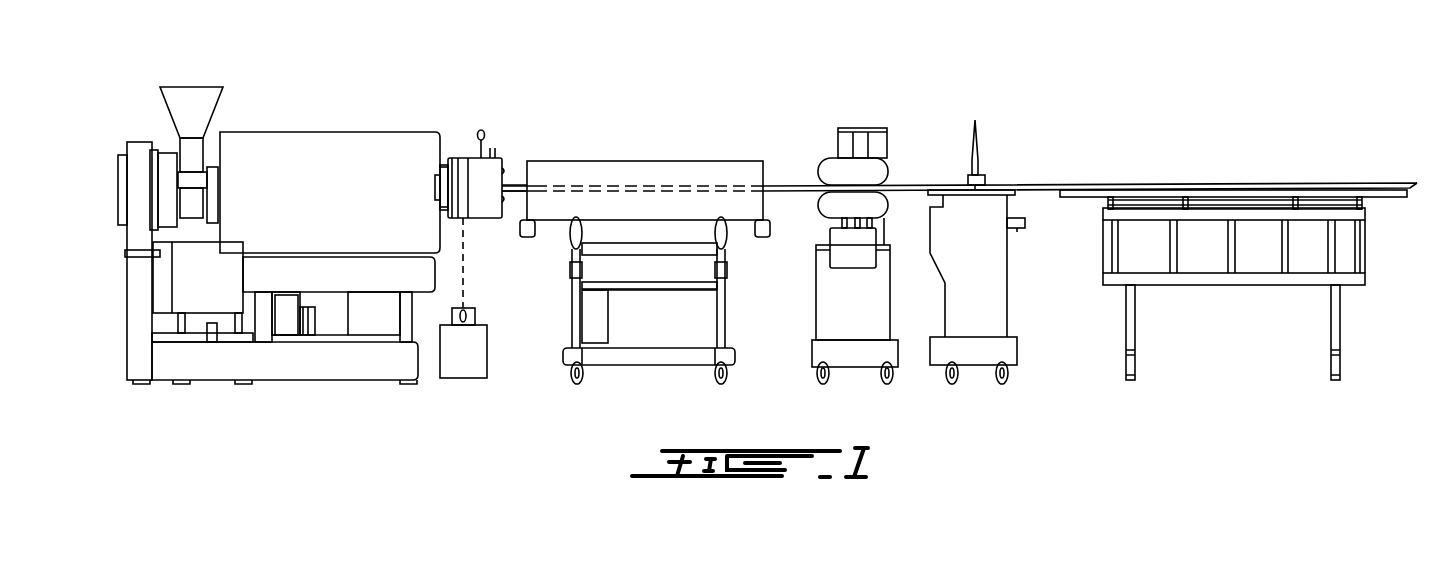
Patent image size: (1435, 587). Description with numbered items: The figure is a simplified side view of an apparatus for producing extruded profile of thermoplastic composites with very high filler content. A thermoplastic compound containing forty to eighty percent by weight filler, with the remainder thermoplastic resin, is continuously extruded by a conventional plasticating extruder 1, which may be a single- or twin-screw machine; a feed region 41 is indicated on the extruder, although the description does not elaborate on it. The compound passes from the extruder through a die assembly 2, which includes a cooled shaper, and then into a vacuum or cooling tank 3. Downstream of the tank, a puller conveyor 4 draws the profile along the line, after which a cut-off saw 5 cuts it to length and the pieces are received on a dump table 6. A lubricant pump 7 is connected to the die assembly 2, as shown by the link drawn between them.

The plasticating extruder 1 is at (333, 113).
The feed section of extruder 41 is at (195, 178).
The die assembly 2 is at (515, 113).
The vacuum or cooling tank 3 is at (666, 113).
The puller conveyor 4 is at (899, 105).
The cut-off saw 5 is at (1019, 97).
The dump table 6 is at (1266, 108).
The lubricant pump 7 is at (503, 312).